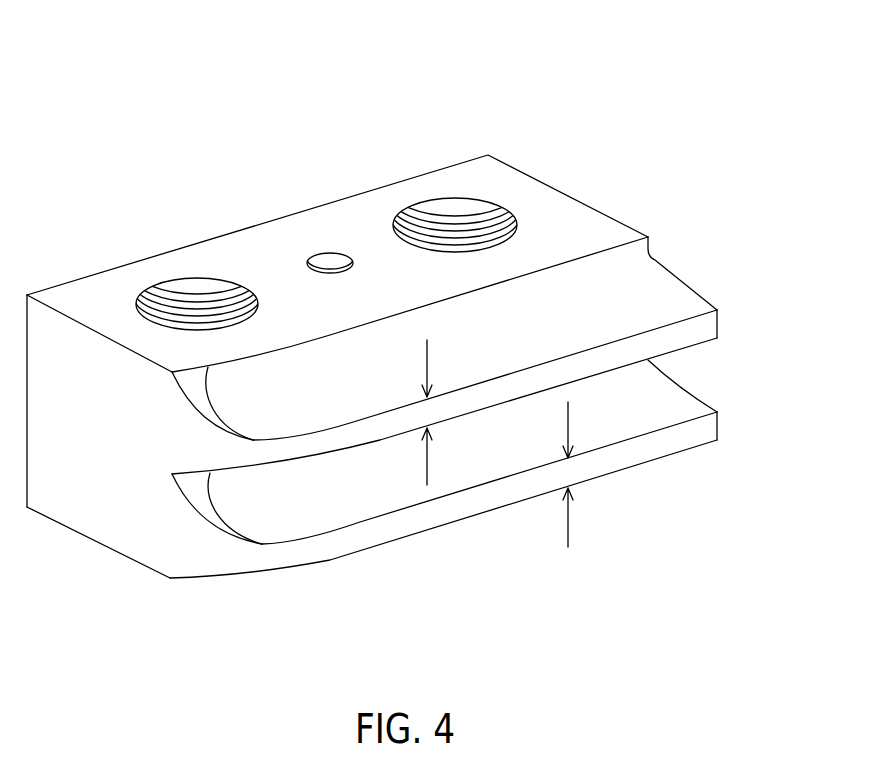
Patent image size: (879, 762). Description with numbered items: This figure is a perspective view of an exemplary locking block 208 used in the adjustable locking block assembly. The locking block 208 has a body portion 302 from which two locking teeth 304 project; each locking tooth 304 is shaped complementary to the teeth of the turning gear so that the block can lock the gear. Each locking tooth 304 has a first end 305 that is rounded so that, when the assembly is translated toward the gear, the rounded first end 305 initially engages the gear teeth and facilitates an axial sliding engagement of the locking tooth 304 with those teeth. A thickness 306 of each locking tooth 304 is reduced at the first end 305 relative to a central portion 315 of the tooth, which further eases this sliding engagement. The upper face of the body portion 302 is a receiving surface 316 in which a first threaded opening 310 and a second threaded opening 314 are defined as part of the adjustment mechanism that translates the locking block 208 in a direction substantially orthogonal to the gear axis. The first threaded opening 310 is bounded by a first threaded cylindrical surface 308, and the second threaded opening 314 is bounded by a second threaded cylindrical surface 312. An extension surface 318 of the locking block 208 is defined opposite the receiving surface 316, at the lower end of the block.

The locking block 208 is at (635, 65).
The body portion 302 is at (603, 213).
The locking tooth 304 is at (718, 323).
The first end 305 is at (268, 458).
The thickness 306 is at (428, 355).
The first threaded cylindrical surface 308 is at (217, 287).
The first threaded opening 310 is at (443, 228).
The second threaded cylindrical surface 312 is at (502, 216).
The second threaded opening 314 is at (188, 308).
The central portion 315 is at (197, 411).
The receiving surface 316 is at (100, 288).
The extension surface 318 is at (130, 568).